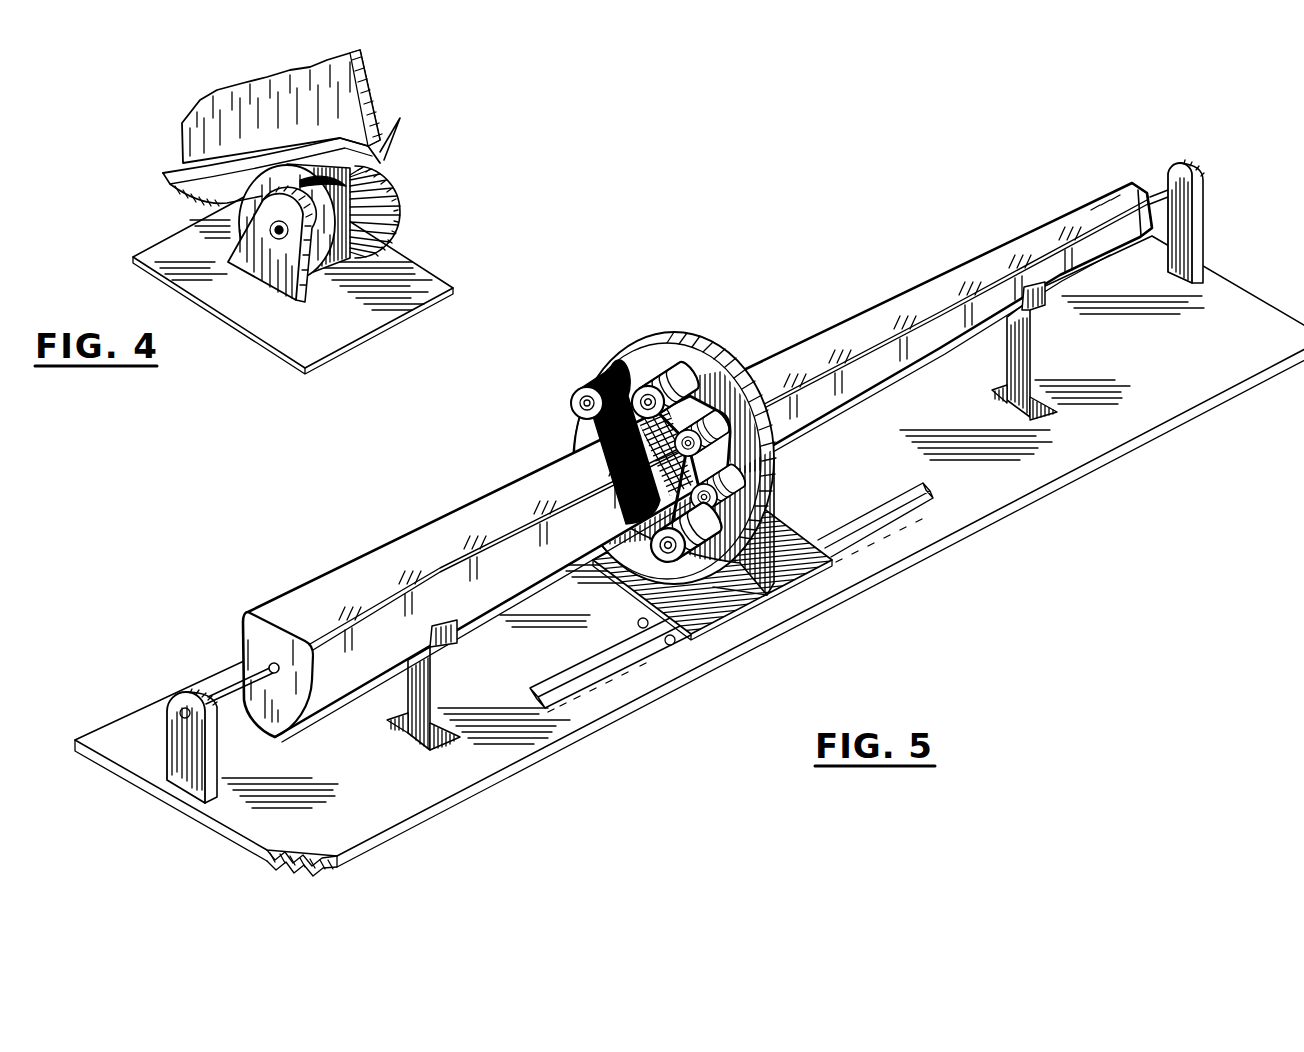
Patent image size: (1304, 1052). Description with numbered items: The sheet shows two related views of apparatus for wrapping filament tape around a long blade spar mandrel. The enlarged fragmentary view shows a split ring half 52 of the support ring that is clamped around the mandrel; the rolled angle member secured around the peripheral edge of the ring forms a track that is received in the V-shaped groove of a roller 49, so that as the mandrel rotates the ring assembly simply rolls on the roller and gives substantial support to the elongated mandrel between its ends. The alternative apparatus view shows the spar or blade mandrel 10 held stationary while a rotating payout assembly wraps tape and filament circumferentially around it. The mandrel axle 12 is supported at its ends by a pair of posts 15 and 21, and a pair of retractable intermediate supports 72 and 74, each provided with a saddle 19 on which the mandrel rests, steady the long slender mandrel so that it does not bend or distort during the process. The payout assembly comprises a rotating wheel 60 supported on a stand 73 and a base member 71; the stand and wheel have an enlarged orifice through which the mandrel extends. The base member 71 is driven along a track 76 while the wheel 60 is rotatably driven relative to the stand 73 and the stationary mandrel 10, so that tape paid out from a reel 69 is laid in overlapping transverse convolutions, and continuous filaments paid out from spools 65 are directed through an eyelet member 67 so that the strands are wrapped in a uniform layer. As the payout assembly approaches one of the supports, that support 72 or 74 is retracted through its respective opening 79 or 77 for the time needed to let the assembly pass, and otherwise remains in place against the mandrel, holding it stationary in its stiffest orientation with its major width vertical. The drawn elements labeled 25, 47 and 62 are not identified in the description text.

In FIG. 5, the spar or blade mandrel 10 is at (664, 462).
In FIG. 5, the mandrel axle 12 is at (216, 696).
In FIG. 5, the post 15 is at (177, 730).
In FIG. 5, the saddle 19 is at (487, 761).
In FIG. 5, the post 21 is at (1203, 200).
In FIG. 5, the flat top surface of tubular member 25 is at (926, 274).
In FIG. 4, the guard plate 47 is at (378, 156).
In FIG. 4, the rollers 49 is at (317, 267).
In FIG. 4, the split ring half 52 is at (355, 100).
In FIG. 5, the rotating wheel 60 is at (625, 362).
In FIG. 5, the base plate 62 is at (458, 778).
In FIG. 5, the spools 65 is at (680, 382).
In FIG. 5, the eyelet member 67 is at (780, 503).
In FIG. 5, the reel 69 is at (585, 422).
In FIG. 5, the base member 71 is at (853, 674).
In FIG. 5, the retractable intermediate support 72 is at (423, 700).
In FIG. 5, the stand 73 is at (684, 340).
In FIG. 5, the retractable intermediate support 74 is at (1066, 428).
In FIG. 5, the track 76 is at (630, 657).
In FIG. 5, the opening 77 is at (1045, 417).
In FIG. 5, the opening 79 is at (447, 737).